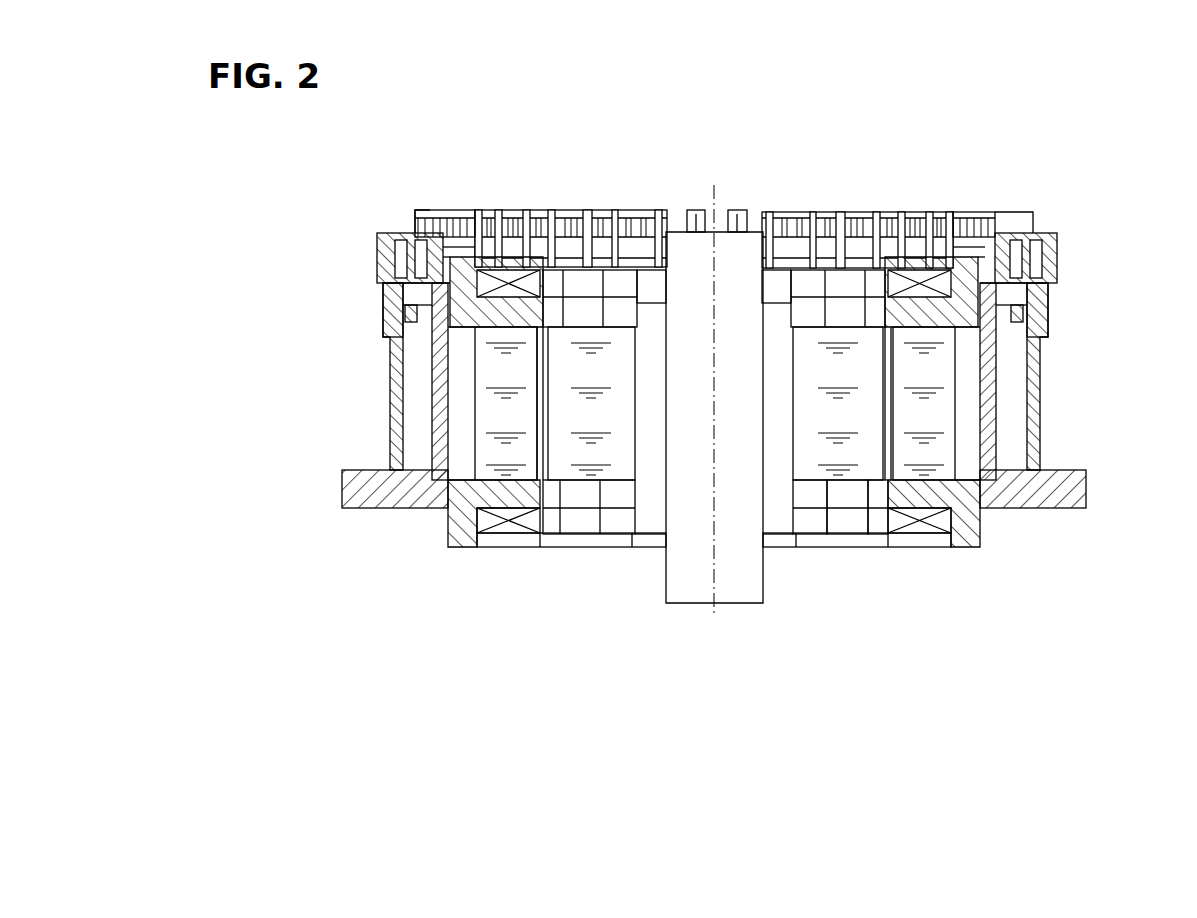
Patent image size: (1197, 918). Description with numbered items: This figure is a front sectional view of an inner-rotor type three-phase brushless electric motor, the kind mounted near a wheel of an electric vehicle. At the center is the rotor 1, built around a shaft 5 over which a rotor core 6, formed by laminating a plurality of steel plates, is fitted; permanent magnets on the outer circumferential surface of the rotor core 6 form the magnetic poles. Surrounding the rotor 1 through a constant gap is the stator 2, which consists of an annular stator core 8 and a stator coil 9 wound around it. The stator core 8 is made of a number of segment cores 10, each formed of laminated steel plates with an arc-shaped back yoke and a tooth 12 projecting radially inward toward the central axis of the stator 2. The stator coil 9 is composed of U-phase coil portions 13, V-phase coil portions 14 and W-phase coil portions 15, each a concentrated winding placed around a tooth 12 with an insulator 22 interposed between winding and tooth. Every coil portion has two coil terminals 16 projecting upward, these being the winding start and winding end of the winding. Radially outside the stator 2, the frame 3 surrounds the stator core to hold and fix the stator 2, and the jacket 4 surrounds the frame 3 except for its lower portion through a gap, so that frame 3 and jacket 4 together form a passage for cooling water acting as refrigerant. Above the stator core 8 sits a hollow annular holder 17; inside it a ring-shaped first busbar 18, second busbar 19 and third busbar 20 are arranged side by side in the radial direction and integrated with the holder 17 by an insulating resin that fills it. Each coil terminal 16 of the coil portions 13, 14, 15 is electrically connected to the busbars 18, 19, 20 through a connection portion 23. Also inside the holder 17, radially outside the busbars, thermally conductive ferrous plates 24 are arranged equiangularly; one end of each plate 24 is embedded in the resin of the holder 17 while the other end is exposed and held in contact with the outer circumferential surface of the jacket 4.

The rotor 1 is at (853, 362).
The stator 2 is at (487, 470).
The frame 3 is at (1072, 497).
The jacket 4 is at (398, 405).
The shaft 5 is at (753, 258).
The rotor core 6 is at (592, 460).
The stator core 8 is at (492, 367).
The stator coil 9 is at (502, 528).
The segment core 10 is at (937, 415).
The tooth 12 is at (932, 455).
The U-phase coil portion 13 is at (812, 525).
The V-phase coil portion 14 is at (850, 525).
The W-phase coil portion 15 is at (882, 525).
The coil terminal 16 is at (590, 232).
The holder 17 is at (1048, 240).
The first busbar 18 is at (400, 233).
The second busbar 19 is at (414, 226).
The third busbar 20 is at (449, 237).
The insulator 22 is at (963, 268).
The connection portion 23 is at (1012, 212).
The plate 24 is at (393, 306).